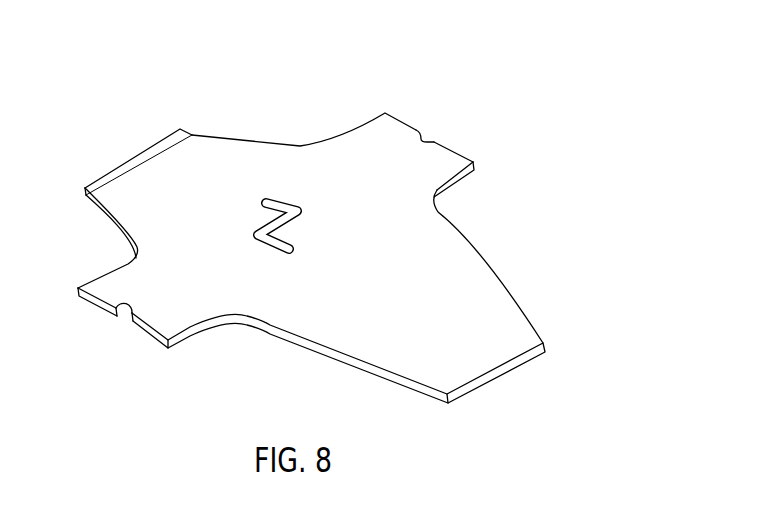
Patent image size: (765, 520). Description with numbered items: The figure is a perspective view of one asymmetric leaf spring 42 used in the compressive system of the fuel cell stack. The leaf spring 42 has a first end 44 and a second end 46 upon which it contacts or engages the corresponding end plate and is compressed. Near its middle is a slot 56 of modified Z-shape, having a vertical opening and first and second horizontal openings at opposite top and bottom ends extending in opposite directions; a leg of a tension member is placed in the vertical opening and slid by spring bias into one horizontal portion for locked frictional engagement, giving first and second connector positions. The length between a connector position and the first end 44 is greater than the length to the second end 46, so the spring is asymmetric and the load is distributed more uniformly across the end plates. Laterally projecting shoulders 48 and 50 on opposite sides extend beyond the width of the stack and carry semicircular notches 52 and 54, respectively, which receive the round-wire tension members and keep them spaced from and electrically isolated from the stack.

The asymmetric leaf spring 42 is at (380, 68).
The first end 44 is at (501, 373).
The second end 46 is at (130, 157).
The shoulder 48 is at (154, 344).
The shoulder 50 is at (468, 156).
The semicircular notch 52 is at (126, 319).
The semicircular notch 54 is at (429, 140).
The slot 56 is at (279, 217).